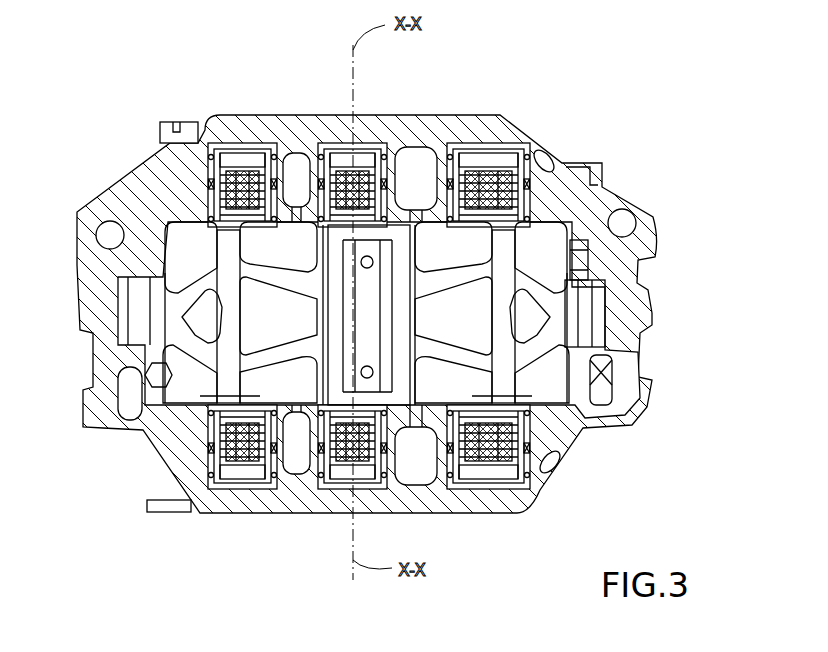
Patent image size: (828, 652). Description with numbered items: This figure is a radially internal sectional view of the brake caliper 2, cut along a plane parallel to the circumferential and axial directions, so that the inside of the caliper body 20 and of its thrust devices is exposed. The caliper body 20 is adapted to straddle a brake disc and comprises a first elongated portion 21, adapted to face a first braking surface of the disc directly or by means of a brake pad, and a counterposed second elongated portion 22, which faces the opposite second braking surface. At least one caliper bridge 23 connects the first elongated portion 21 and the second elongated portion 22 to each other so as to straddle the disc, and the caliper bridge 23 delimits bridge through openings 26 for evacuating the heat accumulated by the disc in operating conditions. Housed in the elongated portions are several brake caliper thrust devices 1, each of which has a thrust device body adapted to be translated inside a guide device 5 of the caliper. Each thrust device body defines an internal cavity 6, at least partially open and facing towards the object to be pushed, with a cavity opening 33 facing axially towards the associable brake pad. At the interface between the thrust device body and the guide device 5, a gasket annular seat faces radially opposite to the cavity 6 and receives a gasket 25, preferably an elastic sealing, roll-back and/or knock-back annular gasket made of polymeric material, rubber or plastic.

The brake caliper thrust device 1 is at (215, 140).
The brake caliper 2 is at (652, 218).
The guide device 5 is at (290, 150).
The internal cavity 6 is at (247, 143).
The caliper body 20 is at (642, 284).
The first elongated portion 21 is at (147, 506).
The second elongated portion 22 is at (162, 133).
The caliper bridge 23 is at (118, 366).
The gasket 25 is at (546, 160).
The bridge through openings 26 is at (200, 330).
The cavity opening 33 is at (576, 183).